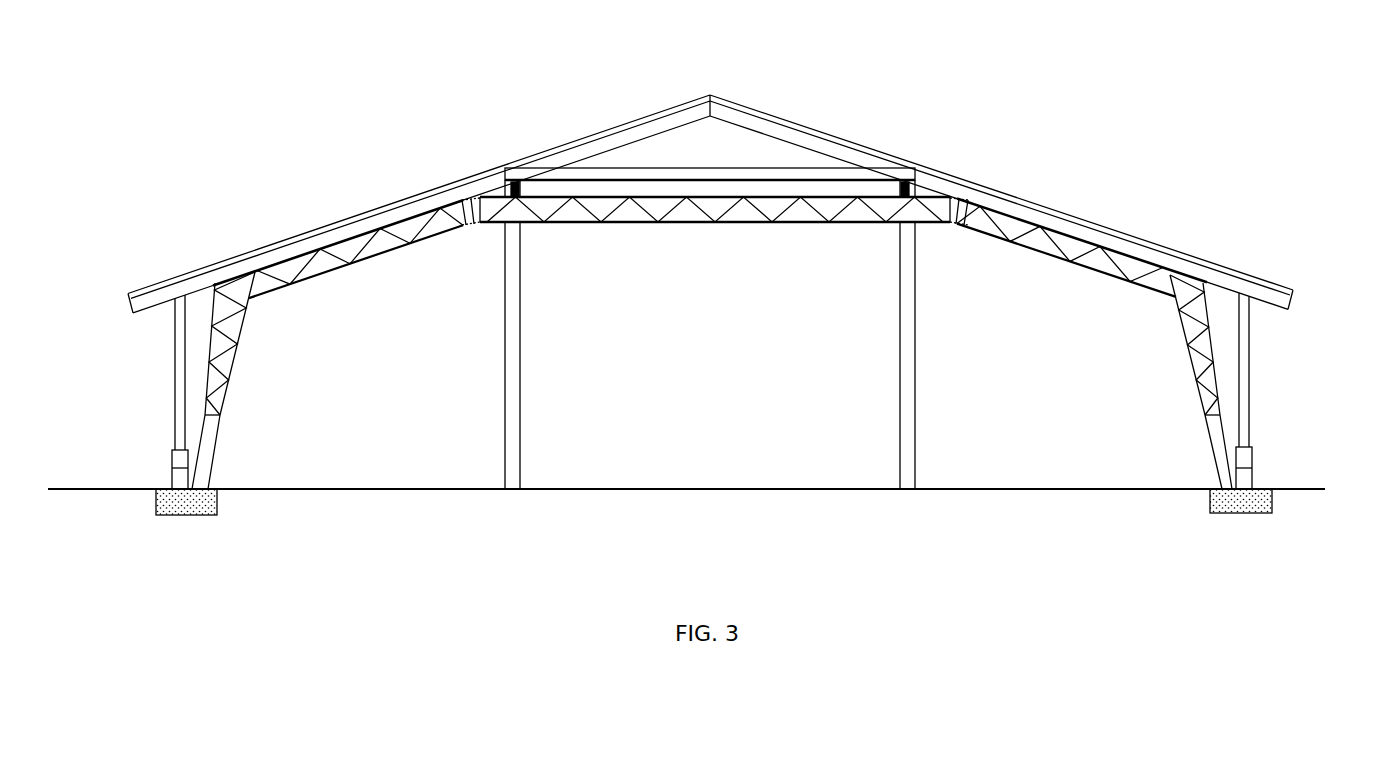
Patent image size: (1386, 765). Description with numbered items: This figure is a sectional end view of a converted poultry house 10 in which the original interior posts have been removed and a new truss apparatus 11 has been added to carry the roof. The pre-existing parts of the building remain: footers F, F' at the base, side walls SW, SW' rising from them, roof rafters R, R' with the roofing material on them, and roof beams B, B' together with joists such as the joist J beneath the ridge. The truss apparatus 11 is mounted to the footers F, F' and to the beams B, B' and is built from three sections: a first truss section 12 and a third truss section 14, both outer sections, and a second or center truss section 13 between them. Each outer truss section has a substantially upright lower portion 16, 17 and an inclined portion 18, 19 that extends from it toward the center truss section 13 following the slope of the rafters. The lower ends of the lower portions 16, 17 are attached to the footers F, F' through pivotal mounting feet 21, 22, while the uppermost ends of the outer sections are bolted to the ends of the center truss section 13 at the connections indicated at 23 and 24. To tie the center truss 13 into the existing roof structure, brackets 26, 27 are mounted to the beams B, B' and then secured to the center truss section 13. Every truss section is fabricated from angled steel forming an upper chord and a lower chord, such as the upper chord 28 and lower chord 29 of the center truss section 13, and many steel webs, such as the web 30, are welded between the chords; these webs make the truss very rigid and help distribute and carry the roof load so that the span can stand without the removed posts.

The converted poultry house 10 is at (1017, 128).
The truss apparatus 11 is at (1045, 352).
The first truss section 12 is at (1150, 345).
The second truss section 13 is at (712, 232).
The third truss section 14 is at (318, 336).
The lower portion 16 is at (1201, 403).
The lower portion 17 is at (220, 411).
The inclined portion 18 is at (1053, 264).
The inclined portion 19 is at (397, 252).
The pivotal mounting foot 21 is at (1208, 480).
The pivotal mounting foot 22 is at (222, 481).
The bolted connection 23 is at (949, 236).
The bolted connection 24 is at (476, 237).
The bracket 26 is at (921, 188).
The bracket 27 is at (505, 188).
The upper chord 28 is at (782, 194).
The lower chord 29 is at (806, 222).
The web 30 is at (637, 226).
The roof beam B is at (883, 340).
The roof beam B' is at (542, 340).
The footer F is at (1241, 529).
The footer F' is at (186, 529).
The joist J is at (739, 172).
The roof rafter R is at (1001, 202).
The roof rafter R' is at (419, 204).
The side wall SW is at (1301, 391).
The side wall SW' is at (125, 392).